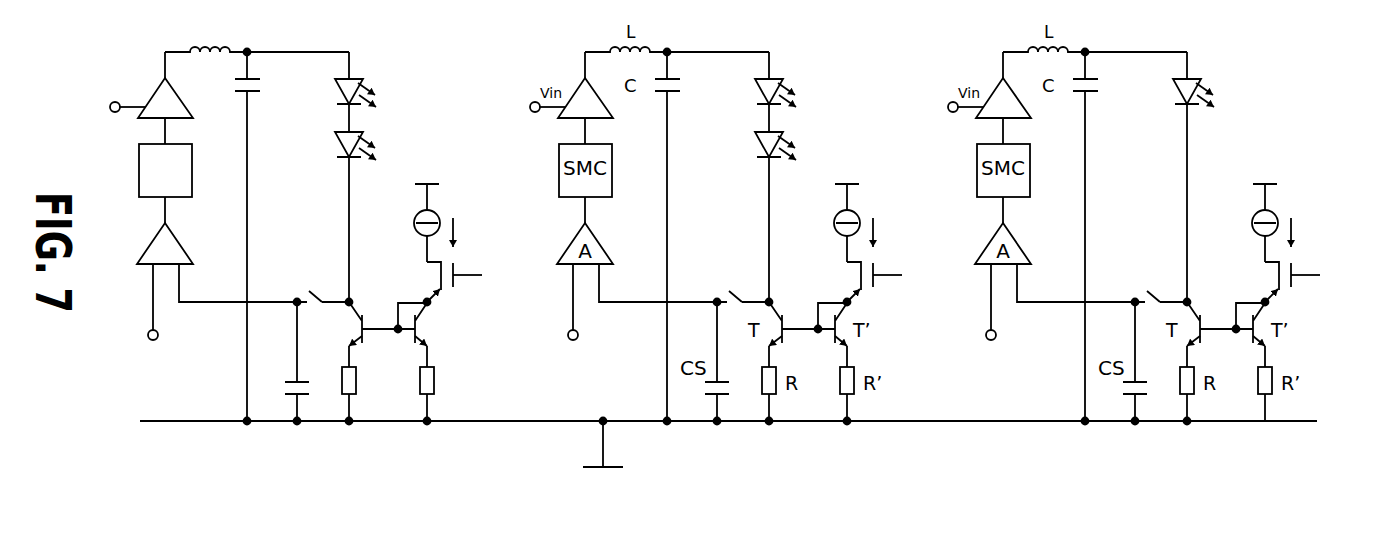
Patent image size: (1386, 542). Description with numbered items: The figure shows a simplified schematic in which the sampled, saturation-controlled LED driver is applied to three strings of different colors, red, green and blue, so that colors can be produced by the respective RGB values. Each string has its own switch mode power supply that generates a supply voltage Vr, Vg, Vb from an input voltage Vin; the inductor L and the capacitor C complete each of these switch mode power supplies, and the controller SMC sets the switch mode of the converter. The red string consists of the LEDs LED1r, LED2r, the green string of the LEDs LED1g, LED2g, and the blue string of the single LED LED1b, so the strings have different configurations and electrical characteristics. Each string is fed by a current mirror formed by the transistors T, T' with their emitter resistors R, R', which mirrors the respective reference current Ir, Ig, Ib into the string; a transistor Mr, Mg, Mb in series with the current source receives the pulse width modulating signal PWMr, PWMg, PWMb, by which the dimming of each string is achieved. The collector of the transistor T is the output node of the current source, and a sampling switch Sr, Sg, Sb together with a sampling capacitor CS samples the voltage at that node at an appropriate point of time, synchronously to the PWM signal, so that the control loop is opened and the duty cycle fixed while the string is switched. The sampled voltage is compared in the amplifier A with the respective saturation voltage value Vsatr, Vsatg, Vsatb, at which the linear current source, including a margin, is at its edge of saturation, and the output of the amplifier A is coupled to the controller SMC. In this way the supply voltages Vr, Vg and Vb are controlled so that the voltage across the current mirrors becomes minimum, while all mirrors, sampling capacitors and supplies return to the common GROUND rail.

The inductor L is at (257, 37).
The capacitor C is at (232, 236).
The input voltage Vin is at (127, 98).
The control unit SMC is at (165, 170).
The amplifier A is at (165, 243).
The sampling capacitor CS is at (284, 361).
The transistor T is at (362, 334).
The transistor T' is at (424, 335).
The resistor R is at (360, 394).
The resistor R' is at (441, 394).
The supply voltage Vr is at (306, 30).
The supply voltage Vg is at (728, 30).
The supply voltage Vb is at (1146, 30).
The saturation voltage value Vsatr is at (180, 335).
The saturation voltage value Vsatg is at (602, 335).
The saturation voltage value Vsatb is at (1020, 335).
The sampling switch Sr is at (309, 281).
The sampling switch Sg is at (730, 281).
The sampling switch Sb is at (1148, 281).
The LED LED1r is at (394, 93).
The LED LED2r is at (394, 147).
The LED LED1g is at (816, 93).
The LED LED2g is at (816, 147).
The LED LED1b is at (1234, 93).
The current Ir is at (436, 223).
The current Ig is at (858, 223).
The current Ib is at (1276, 223).
The transistor Mr is at (424, 282).
The transistor Mg is at (844, 282).
The transistor Mb is at (1262, 282).
The pulse width modulating signal PWMr is at (497, 275).
The pulse width modulating signal PWMg is at (919, 275).
The pulse width modulating signal PWMb is at (1337, 275).
The ground GROUND is at (728, 461).